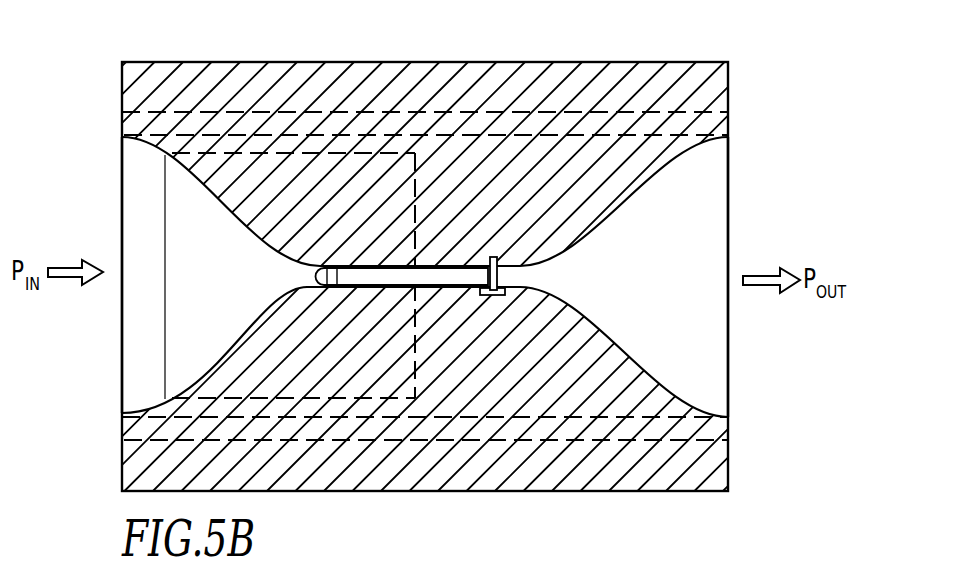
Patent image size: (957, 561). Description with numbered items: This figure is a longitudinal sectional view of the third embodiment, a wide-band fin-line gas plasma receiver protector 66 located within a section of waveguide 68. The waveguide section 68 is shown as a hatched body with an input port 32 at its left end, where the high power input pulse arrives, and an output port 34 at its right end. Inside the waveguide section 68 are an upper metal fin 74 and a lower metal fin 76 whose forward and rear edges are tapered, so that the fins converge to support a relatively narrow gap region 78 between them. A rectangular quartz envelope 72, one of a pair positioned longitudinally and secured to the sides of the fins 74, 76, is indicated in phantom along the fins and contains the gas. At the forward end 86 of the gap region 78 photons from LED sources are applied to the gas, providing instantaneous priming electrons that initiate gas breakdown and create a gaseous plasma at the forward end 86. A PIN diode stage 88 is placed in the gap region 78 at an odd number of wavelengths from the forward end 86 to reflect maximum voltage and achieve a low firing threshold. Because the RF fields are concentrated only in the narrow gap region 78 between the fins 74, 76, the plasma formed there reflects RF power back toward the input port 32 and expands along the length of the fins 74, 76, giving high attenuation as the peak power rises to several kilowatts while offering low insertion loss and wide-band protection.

The input port 32 is at (122, 336).
The outlet port 34 is at (728, 210).
The wide-band fin-line gas plasma receiver protector 66 is at (757, 74).
The waveguide section 68 is at (421, 62).
The rectangular quartz envelope 72 is at (290, 140).
The upper metal fin 74 is at (588, 74).
The lower metal fin 76 is at (590, 477).
The narrow gap region 78 is at (420, 299).
The forward end of the gap region 86 is at (315, 276).
The PIN diode stage 88 is at (516, 275).